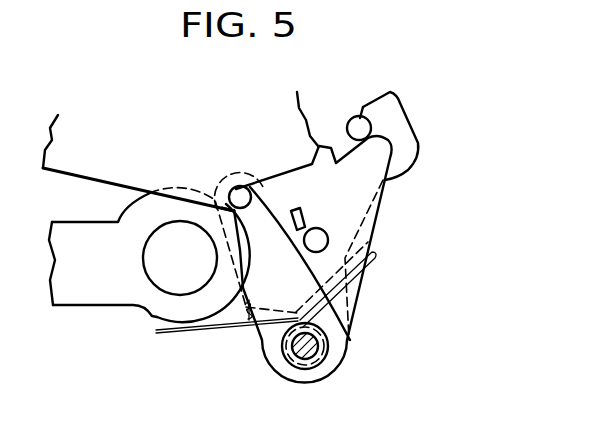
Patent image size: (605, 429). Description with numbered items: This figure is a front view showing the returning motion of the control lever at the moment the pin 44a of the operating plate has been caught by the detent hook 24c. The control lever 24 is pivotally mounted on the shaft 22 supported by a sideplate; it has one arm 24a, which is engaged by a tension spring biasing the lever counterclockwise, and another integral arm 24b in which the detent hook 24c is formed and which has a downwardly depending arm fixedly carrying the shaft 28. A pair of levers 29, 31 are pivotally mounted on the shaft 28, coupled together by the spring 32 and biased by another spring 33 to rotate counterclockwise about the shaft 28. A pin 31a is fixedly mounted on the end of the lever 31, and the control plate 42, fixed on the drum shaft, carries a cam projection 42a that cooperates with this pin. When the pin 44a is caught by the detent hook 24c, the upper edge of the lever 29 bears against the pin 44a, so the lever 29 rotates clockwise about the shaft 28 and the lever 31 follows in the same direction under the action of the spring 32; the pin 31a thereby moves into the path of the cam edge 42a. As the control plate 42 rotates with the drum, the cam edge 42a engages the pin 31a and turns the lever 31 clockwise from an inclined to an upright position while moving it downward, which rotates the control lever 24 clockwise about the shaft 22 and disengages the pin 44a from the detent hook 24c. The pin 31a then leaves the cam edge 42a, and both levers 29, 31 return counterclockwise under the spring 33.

The control lever 24 is at (82, 219).
The arm 24a is at (77, 306).
The arm 24b is at (411, 127).
The detent hook 24c is at (362, 105).
The shaft 22 is at (166, 285).
The control plate 42 is at (68, 174).
The cam projection 42a is at (237, 212).
The lever 31 is at (312, 236).
The pin 31a is at (243, 185).
The shaft 28 is at (318, 346).
The lever 29 is at (381, 202).
The spring 32 is at (248, 322).
The spring 33 is at (200, 332).
The pin 44a is at (347, 128).